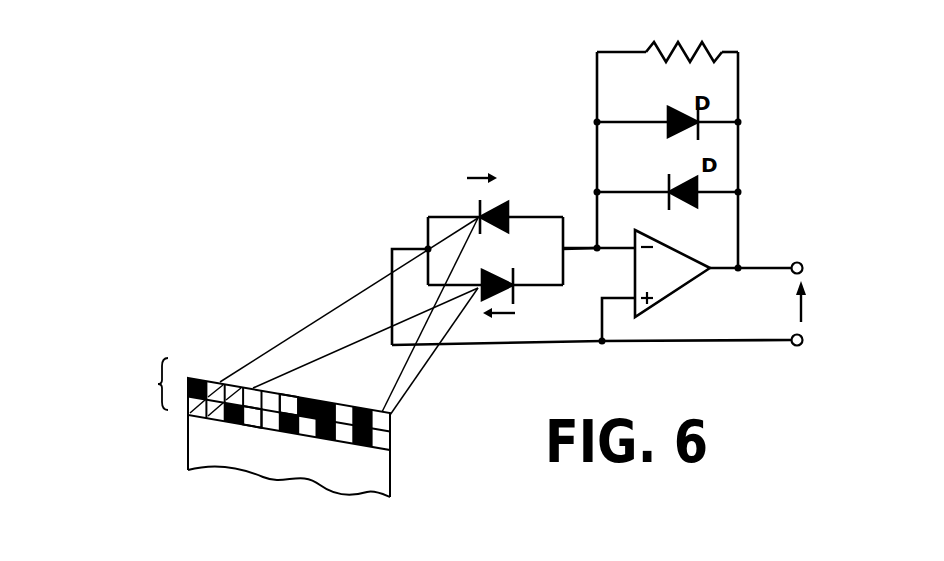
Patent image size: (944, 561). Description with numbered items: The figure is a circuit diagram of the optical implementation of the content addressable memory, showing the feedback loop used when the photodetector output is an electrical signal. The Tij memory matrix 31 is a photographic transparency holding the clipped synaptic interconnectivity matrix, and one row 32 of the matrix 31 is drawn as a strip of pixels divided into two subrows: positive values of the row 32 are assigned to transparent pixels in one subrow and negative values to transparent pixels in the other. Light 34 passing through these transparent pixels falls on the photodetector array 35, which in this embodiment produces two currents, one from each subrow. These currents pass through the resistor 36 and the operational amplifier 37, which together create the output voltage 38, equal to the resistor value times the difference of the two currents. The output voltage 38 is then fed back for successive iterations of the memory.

The Tij memory matrix 31 is at (298, 467).
The row of the Tij matrix 32 is at (180, 438).
The light 34 is at (357, 300).
The photodetector array 35 is at (480, 206).
The resistor 36 is at (697, 42).
The operational amplifier 37 is at (670, 247).
The output voltage 38 is at (870, 345).